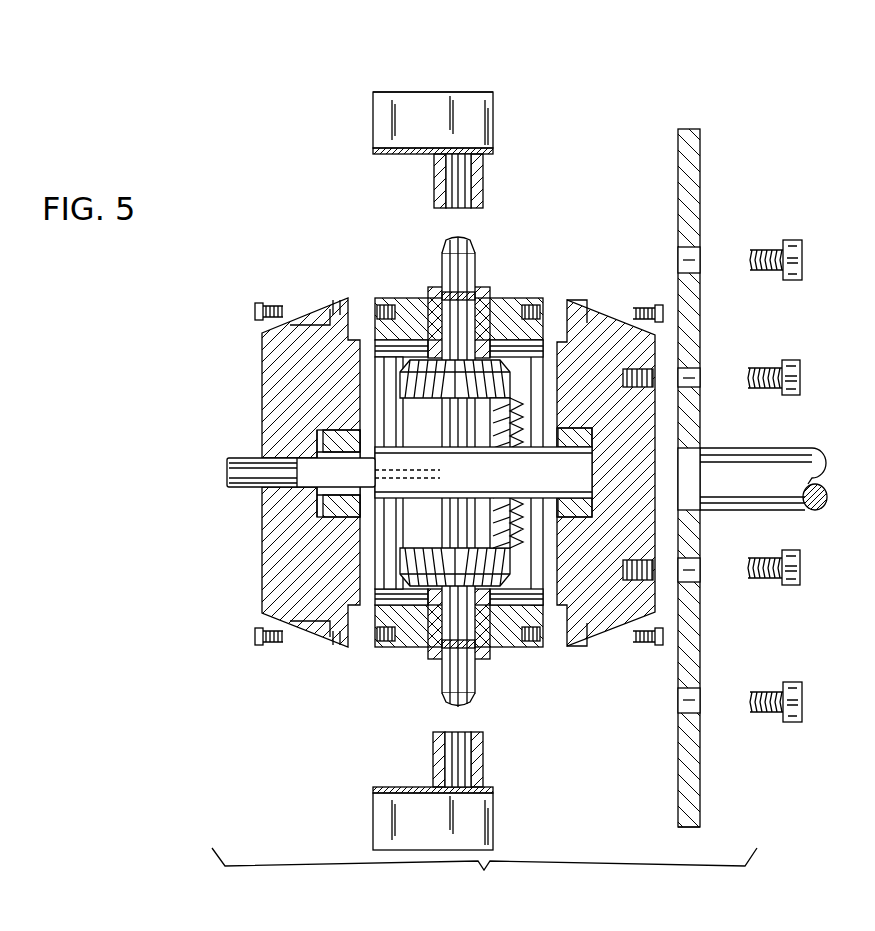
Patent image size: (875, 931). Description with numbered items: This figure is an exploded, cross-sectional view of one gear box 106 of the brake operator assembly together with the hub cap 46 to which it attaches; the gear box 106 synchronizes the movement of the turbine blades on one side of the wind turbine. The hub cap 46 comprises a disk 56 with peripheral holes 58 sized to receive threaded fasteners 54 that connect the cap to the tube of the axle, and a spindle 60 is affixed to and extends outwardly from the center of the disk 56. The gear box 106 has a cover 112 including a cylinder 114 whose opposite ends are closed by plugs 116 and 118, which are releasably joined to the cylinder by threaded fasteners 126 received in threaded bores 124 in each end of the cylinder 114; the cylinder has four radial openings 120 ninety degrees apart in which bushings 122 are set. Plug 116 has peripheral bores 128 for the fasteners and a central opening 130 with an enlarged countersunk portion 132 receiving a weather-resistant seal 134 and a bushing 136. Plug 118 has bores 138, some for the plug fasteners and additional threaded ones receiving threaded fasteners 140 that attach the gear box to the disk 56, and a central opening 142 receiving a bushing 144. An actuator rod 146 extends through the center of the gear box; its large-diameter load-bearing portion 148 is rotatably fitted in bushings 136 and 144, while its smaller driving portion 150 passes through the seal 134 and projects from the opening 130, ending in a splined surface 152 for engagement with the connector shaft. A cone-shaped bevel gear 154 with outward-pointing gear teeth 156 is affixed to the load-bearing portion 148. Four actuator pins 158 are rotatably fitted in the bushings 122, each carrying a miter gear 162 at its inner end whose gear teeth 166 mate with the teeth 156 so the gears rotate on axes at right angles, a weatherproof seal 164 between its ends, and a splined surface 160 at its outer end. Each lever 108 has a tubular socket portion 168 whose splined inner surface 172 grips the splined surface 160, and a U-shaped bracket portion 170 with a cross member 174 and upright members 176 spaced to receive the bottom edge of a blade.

The hub cap 46 is at (703, 140).
The threaded fastener 54 is at (803, 250).
The disk 56 is at (703, 790).
The hole 58 is at (683, 258).
The spindle 60 is at (772, 450).
The gear box 106 is at (412, 467).
The lever 108 is at (434, 442).
The cover 112 is at (395, 298).
The cylinder 114 is at (388, 648).
The plug 116 is at (265, 412).
The plug 118 is at (645, 416).
The radial opening 120 is at (428, 298).
The bushing 122 is at (487, 290).
The threaded bore 124 is at (386, 306).
The threaded fastener 126 is at (648, 686).
The bore 128 is at (333, 298).
The central opening 130 is at (300, 440).
The countersunk portion 132 is at (322, 432).
The weather-resistant seal 134 is at (323, 495).
The bushing 136 is at (327, 517).
The bore 138 is at (572, 300).
The threaded fastener 140 is at (802, 378).
The central opening 142 is at (592, 426).
The bushing 144 is at (594, 516).
The actuator rod 146 is at (440, 445).
The load-bearing portion 148 is at (398, 498).
The driving portion 150 is at (312, 487).
The splined surface 152 is at (227, 478).
The bevel gear 154 is at (540, 415).
The gear teeth 156 is at (497, 470).
The actuator pin 158 is at (446, 236).
The splined surface 160 is at (468, 240).
The miter gear 162 is at (410, 398).
The weatherproof seal 164 is at (464, 293).
The gear teeth 166 is at (400, 386).
The socket portion 168 is at (437, 175).
The bracket portion 170 is at (470, 122).
The inner surface 172 is at (473, 172).
The cross member 174 is at (380, 150).
The upright member 176 is at (432, 92).